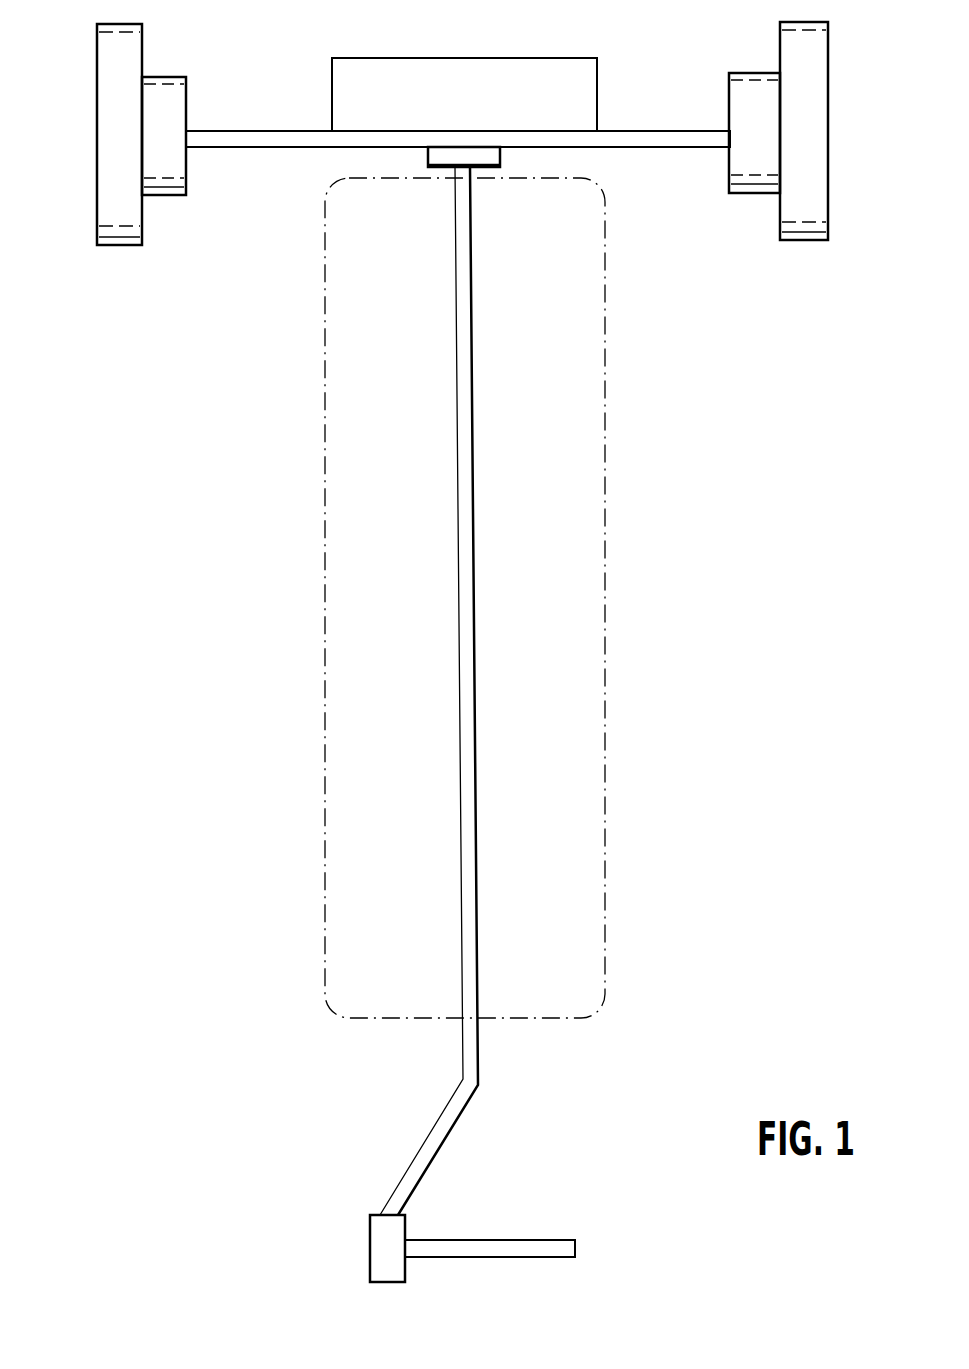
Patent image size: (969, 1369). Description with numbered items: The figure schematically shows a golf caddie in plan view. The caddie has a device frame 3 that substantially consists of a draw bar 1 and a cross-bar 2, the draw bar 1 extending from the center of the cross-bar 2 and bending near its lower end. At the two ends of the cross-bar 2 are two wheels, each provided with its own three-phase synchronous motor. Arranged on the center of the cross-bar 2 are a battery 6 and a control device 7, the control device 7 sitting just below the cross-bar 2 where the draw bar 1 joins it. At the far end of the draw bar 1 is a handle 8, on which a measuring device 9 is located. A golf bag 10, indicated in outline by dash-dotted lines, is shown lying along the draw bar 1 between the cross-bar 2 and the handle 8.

The draw bar 1 is at (470, 793).
The cross-bar 2 is at (265, 135).
The device frame 3 is at (428, 157).
The battery 6 is at (518, 95).
The control device 7 is at (478, 155).
The handle 8 is at (483, 1250).
The measuring device 9 is at (387, 1249).
The golf bag 10 is at (550, 483).